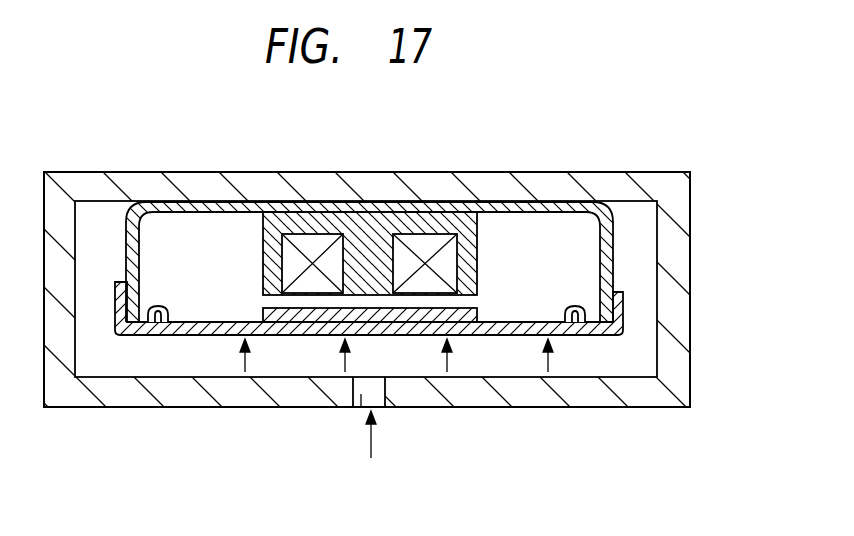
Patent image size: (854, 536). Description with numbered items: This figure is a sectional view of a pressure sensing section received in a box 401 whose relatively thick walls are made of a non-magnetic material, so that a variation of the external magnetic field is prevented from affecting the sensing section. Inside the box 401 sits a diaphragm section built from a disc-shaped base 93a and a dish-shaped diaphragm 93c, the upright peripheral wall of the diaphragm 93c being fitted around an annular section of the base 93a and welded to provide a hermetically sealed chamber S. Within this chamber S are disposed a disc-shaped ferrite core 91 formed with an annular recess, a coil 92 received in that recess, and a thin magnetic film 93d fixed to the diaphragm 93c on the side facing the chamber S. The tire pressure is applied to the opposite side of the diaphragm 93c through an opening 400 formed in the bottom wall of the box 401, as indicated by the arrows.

The box 401 is at (675, 237).
The opening 400 is at (363, 398).
The base 93a is at (184, 204).
The ferrite core 91 is at (470, 248).
The coil 92 is at (300, 245).
The magnetic film 93d is at (467, 318).
The diaphragm 93c is at (214, 327).
The hermetically sealed chamber S is at (165, 240).